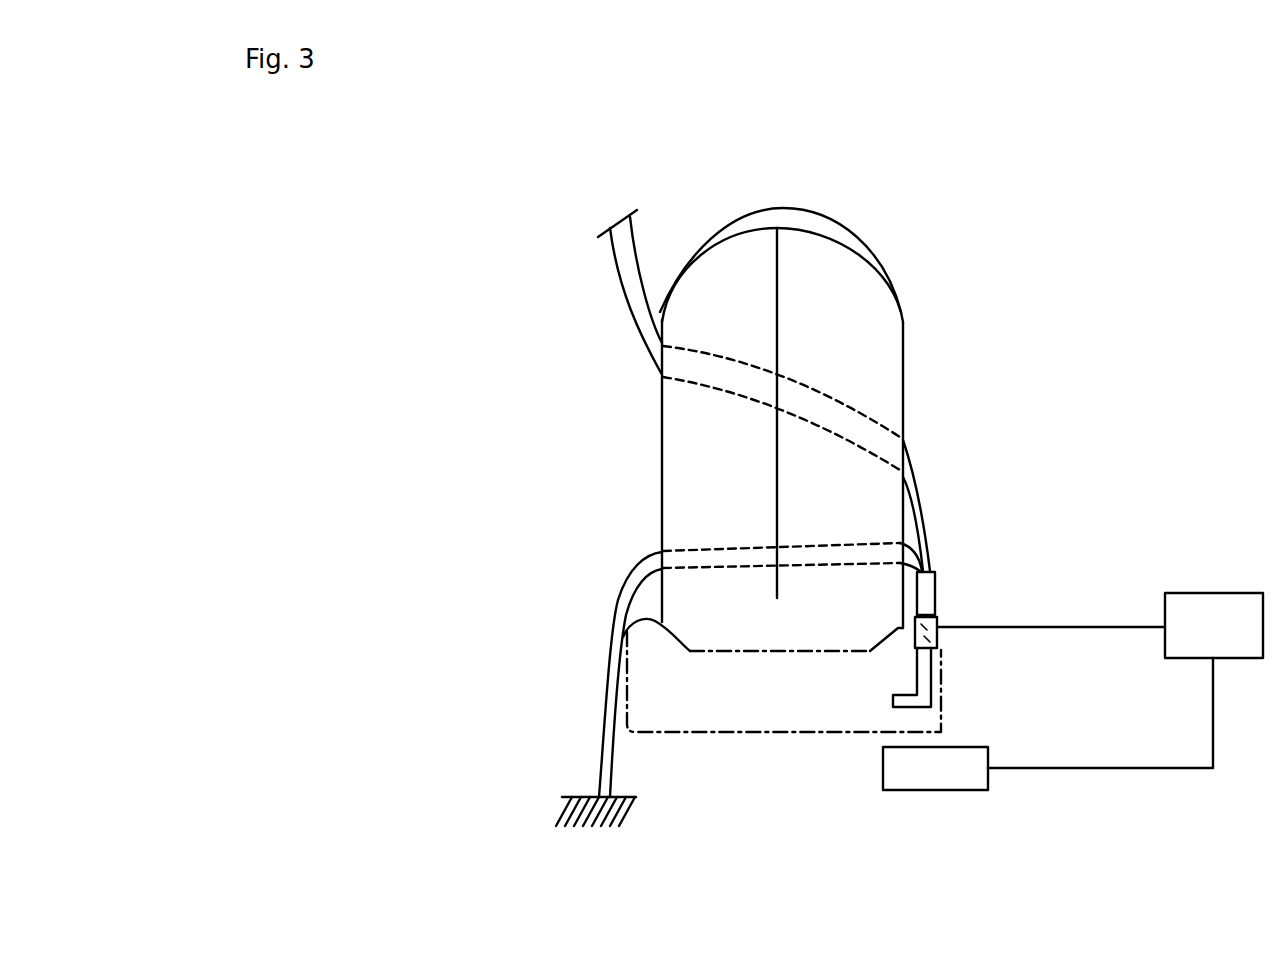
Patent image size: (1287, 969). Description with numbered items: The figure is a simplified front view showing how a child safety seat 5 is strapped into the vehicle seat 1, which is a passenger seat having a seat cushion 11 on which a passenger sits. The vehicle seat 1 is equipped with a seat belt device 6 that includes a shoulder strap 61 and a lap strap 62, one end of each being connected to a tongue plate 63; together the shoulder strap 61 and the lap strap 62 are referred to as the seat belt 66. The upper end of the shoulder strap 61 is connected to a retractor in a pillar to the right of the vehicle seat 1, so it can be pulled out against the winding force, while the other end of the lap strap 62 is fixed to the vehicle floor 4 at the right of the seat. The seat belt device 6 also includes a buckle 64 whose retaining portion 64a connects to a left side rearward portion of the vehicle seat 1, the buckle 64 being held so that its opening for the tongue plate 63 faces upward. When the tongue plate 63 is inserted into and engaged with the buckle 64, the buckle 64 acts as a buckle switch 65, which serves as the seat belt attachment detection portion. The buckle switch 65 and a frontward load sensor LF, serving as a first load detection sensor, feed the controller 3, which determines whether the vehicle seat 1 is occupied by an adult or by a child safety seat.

The vehicle seat 1 is at (914, 196).
The controller 3 is at (1227, 593).
The vehicle floor 4 is at (571, 794).
The child safety seat 5 is at (862, 393).
The seat belt device 6 is at (541, 178).
The seat cushion 11 is at (752, 722).
The shoulder strap 61 is at (617, 272).
The lap strap 62 is at (618, 593).
The tongue plate 63 is at (930, 587).
The buckle 64 is at (939, 641).
The retaining portion 64a is at (900, 704).
The buckle switch 65 is at (955, 615).
The seat belt 66 is at (960, 528).
The frontward load sensor LF is at (948, 792).